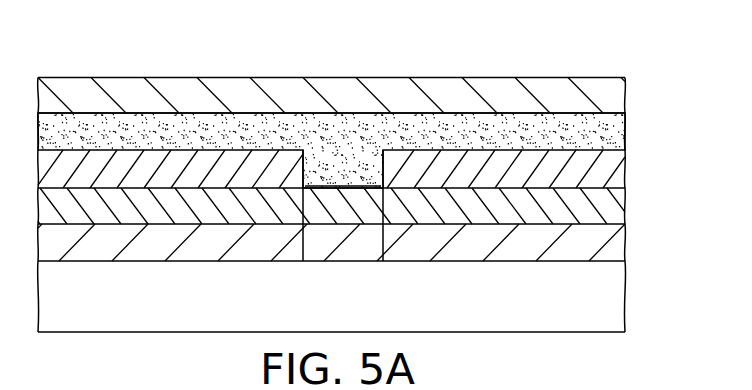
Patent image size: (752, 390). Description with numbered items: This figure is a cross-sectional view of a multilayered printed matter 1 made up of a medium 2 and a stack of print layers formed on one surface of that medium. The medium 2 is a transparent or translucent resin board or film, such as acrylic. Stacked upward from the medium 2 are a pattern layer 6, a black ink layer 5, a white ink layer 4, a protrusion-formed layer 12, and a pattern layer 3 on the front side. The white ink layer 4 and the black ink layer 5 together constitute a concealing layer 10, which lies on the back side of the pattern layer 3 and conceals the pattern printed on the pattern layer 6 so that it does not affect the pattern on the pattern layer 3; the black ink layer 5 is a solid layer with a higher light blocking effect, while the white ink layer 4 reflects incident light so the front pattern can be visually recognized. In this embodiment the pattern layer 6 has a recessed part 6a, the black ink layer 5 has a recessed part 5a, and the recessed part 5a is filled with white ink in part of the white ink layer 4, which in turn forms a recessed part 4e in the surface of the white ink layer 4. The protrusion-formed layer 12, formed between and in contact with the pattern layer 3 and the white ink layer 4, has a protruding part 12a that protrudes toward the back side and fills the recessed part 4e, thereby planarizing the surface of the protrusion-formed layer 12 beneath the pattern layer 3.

The multilayered printed matter 1 is at (620, 46).
The medium 2 is at (628, 298).
The pattern layer 3 is at (627, 99).
The white ink layer 4 is at (628, 170).
The recessed part 4e is at (374, 157).
The black ink layer 5 is at (354, 205).
The recessed part 5a is at (305, 210).
The pattern layer 6 is at (628, 243).
The recessed part 6a is at (383, 244).
The concealing layer 10 is at (375, 187).
The protrusion-formed layer 12 is at (628, 136).
The protruding part 12a is at (331, 200).